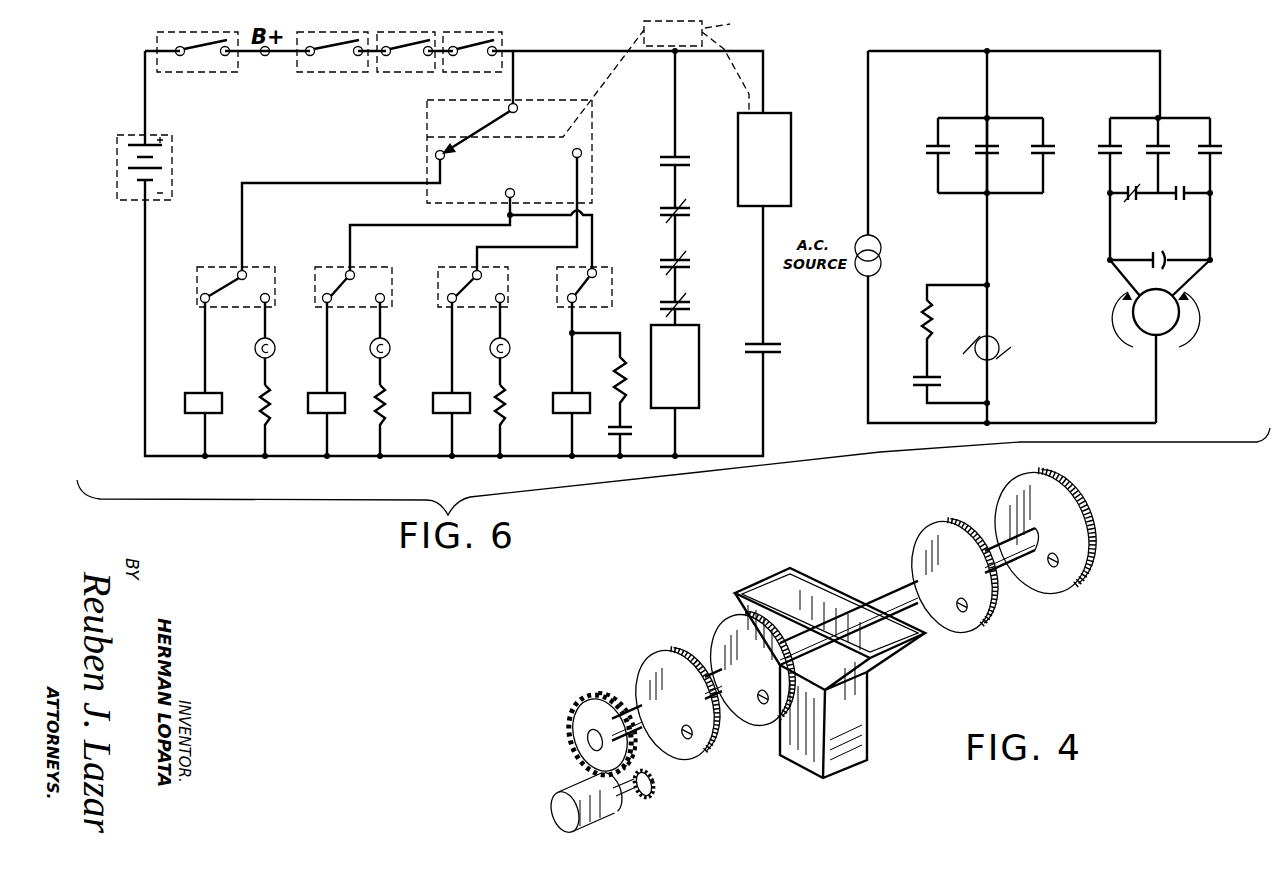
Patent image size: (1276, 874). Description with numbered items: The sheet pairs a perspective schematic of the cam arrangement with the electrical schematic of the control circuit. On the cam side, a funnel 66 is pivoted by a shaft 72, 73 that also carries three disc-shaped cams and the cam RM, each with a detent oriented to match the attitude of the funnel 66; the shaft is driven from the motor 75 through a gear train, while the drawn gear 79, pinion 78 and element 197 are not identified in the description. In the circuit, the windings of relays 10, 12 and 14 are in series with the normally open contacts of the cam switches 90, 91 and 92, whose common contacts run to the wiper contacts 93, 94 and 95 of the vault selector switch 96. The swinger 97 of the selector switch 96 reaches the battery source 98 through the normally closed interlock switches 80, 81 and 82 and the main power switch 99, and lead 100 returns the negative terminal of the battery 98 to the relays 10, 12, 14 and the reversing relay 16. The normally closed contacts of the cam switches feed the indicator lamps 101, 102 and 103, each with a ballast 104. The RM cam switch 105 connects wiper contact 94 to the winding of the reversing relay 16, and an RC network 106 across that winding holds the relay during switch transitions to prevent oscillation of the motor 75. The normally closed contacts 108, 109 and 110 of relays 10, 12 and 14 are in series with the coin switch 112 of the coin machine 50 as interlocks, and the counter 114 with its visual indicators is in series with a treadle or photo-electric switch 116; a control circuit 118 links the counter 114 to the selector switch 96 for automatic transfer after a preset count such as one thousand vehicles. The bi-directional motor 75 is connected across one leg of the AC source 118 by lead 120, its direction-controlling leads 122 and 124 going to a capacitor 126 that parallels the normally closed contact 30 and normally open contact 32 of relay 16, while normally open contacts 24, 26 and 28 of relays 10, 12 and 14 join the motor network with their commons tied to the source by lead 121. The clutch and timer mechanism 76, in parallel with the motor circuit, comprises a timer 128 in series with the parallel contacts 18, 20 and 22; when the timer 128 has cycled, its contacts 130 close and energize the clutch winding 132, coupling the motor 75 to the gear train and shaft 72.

In FIG. 6, the relay 10 is at (190, 395).
In FIG. 6, the relay 12 is at (318, 395).
In FIG. 6, the relay 14 is at (442, 395).
In FIG. 6, the reversing relay 16 is at (562, 395).
In FIG. 6, the open contact 18 is at (928, 143).
In FIG. 6, the open contact 20 is at (982, 143).
In FIG. 6, the open contact 22 is at (1048, 143).
In FIG. 6, the normally open contact 24 is at (1100, 152).
In FIG. 6, the normally open contact 26 is at (1151, 143).
In FIG. 6, the normally open contact 28 is at (1219, 147).
In FIG. 6, the normally closed contact 30 is at (1137, 180).
In FIG. 6, the normally open contact 32 is at (1185, 179).
In FIG. 6, the coin machine 50 is at (699, 409).
In FIG. 4, the funnel 66 is at (762, 582).
In FIG. 4, the shaft 72 is at (1005, 578).
In FIG. 4, the shaft 73 is at (640, 706).
In FIG. 6, the motor 75 is at (1174, 333).
In FIG. 4, the motor 75 is at (558, 798).
In FIG. 6, the clutch and timer mechanism 76 is at (999, 340).
In FIG. 4, the pinion gear 78 is at (656, 796).
In FIG. 4, the gear 79 is at (588, 699).
In FIG. 6, the interlock switch 80 is at (492, 57).
In FIG. 6, the interlock switch 81 is at (432, 57).
In FIG. 6, the interlock switch 82 is at (365, 57).
In FIG. 6, the cam switch 90 is at (205, 266).
In FIG. 6, the cam switch 91 is at (323, 265).
In FIG. 6, the cam switch 92 is at (449, 265).
In FIG. 6, the wiper contact 93 is at (435, 155).
In FIG. 6, the wiper contact 94 is at (514, 190).
In FIG. 6, the wiper contact 95 is at (583, 150).
In FIG. 6, the vault selector switch 96 is at (432, 127).
In FIG. 6, the swinger 97 is at (518, 104).
In FIG. 6, the battery source 98 is at (117, 152).
In FIG. 6, the main power switch 99 is at (157, 43).
In FIG. 6, the lead 100 is at (145, 302).
In FIG. 6, the indicator lamp 101 is at (270, 341).
In FIG. 6, the indicator lamp 102 is at (386, 341).
In FIG. 6, the indicator lamp 103 is at (507, 341).
In FIG. 6, the resistance ballast 104 is at (270, 430).
In FIG. 6, the RM cam switch 105 is at (605, 266).
In FIG. 6, the RC network 106 is at (631, 361).
In FIG. 6, the normally closed contact 108 is at (692, 216).
In FIG. 6, the normally closed contact 109 is at (692, 268).
In FIG. 6, the normally closed contact 110 is at (692, 311).
In FIG. 6, the coin switch 112 is at (681, 156).
In FIG. 6, the electrical counter 114 is at (778, 113).
In FIG. 6, the switch 116 is at (782, 353).
In FIG. 6, the control circuit 118 is at (838, 292).
In FIG. 6, the lead 120 is at (1160, 368).
In FIG. 6, the lead 121 is at (1062, 51).
In FIG. 6, the direction-controlling lead 122 is at (1119, 278).
In FIG. 6, the direction-controlling lead 124 is at (1191, 283).
In FIG. 6, the capacitor 126 is at (1148, 255).
In FIG. 6, the timer 128 is at (996, 360).
In FIG. 6, the normally open contacts 130 is at (918, 392).
In FIG. 6, the clutch winding 132 is at (920, 338).
In FIG. 6, the switch 197 is at (306, 57).